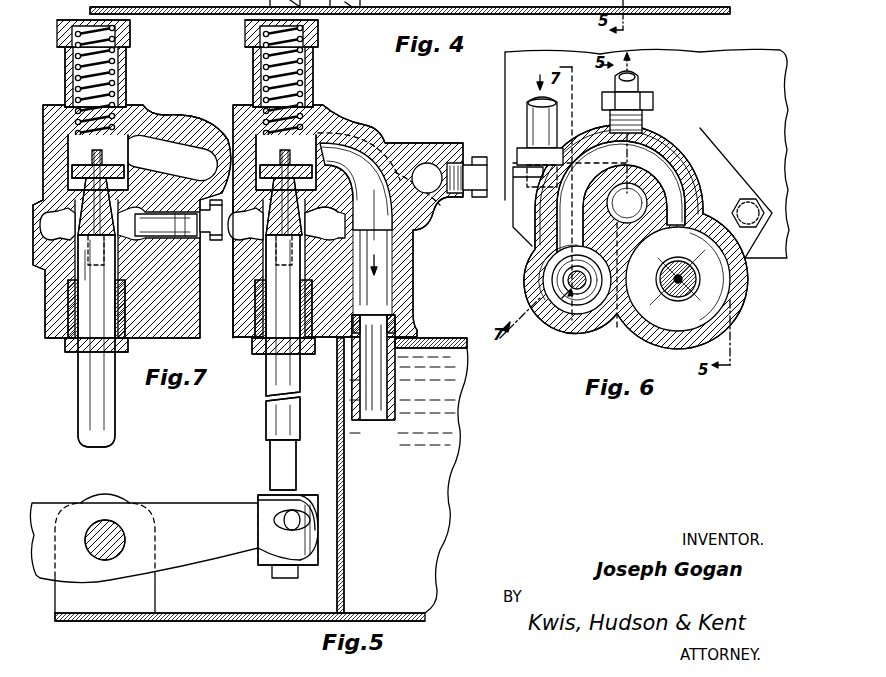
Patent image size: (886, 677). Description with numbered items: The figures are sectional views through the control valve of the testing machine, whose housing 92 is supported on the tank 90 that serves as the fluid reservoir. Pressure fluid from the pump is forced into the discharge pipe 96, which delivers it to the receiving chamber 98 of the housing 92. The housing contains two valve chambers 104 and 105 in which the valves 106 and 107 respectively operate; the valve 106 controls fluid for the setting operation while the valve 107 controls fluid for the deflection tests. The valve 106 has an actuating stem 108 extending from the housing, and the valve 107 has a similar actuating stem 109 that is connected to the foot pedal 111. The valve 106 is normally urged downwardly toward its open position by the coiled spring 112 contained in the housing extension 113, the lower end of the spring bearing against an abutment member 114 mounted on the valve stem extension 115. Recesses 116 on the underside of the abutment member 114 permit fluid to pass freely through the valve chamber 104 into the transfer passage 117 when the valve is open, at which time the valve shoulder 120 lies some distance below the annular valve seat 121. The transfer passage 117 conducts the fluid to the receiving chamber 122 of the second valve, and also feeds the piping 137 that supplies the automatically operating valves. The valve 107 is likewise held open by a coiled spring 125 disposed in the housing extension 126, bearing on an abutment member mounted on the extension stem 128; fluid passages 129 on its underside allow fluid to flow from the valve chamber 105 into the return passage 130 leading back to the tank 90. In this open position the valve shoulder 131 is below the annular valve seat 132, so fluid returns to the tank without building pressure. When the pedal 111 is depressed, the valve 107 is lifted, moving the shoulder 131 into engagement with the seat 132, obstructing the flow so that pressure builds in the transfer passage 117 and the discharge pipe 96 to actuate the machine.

In FIG. 5, the tank 90 is at (445, 342).
In FIG. 6, the housing 92 is at (705, 183).
In FIG. 7, the discharge pipe 96 is at (222, 208).
In FIG. 6, the discharge pipe 96 is at (528, 98).
In FIG. 7, the receiving chamber 98 is at (60, 290).
In FIG. 6, the receiving chamber 98 is at (636, 246).
In FIG. 7, the valve chamber 104 is at (82, 205).
In FIG. 5, the valve chamber 105 is at (345, 205).
In FIG. 7, the valve 106 is at (70, 305).
In FIG. 5, the valve 107 is at (345, 275).
In FIG. 7, the actuating stem 108 is at (88, 400).
In FIG. 5, the actuating stem 109 is at (272, 425).
In FIG. 5, the actuating pedal 111 is at (190, 510).
In FIG. 7, the coiled spring 112 is at (118, 77).
In FIG. 7, the housing extension 113 is at (128, 58).
In FIG. 6, the housing extension 113 is at (567, 303).
In FIG. 7, the abutment member 114 is at (70, 165).
In FIG. 6, the abutment member 114 is at (565, 282).
In FIG. 7, the valve stem extension 115 is at (168, 150).
In FIG. 6, the valve stem extension 115 is at (585, 305).
In FIG. 7, the recesses 116 is at (75, 180).
In FIG. 7, the transfer passage 117 is at (176, 145).
In FIG. 5, the transfer passage 117 is at (430, 170).
In FIG. 6, the transfer passage 117 is at (640, 160).
In FIG. 7, the valve shoulder 120 is at (115, 225).
In FIG. 7, the annular valve seat 121 is at (48, 275).
In FIG. 5, the annular valve seat 121 is at (322, 168).
In FIG. 5, the receiving chamber 122 is at (233, 283).
In FIG. 6, the receiving chamber 122 is at (690, 285).
In FIG. 5, the coiled spring 125 is at (318, 68).
In FIG. 5, the housing extension 126 is at (313, 88).
In FIG. 5, the extension stem 128 is at (350, 200).
In FIG. 6, the extension stem 128 is at (700, 279).
In FIG. 5, the fluid passages 129 is at (345, 185).
In FIG. 5, the return passage 130 is at (395, 243).
In FIG. 6, the return passage 130 is at (690, 140).
In FIG. 5, the valve shoulder 131 is at (312, 222).
In FIG. 5, the annular valve seat 132 is at (262, 225).
In FIG. 5, the piping 137 is at (480, 157).
In FIG. 6, the piping 137 is at (640, 82).